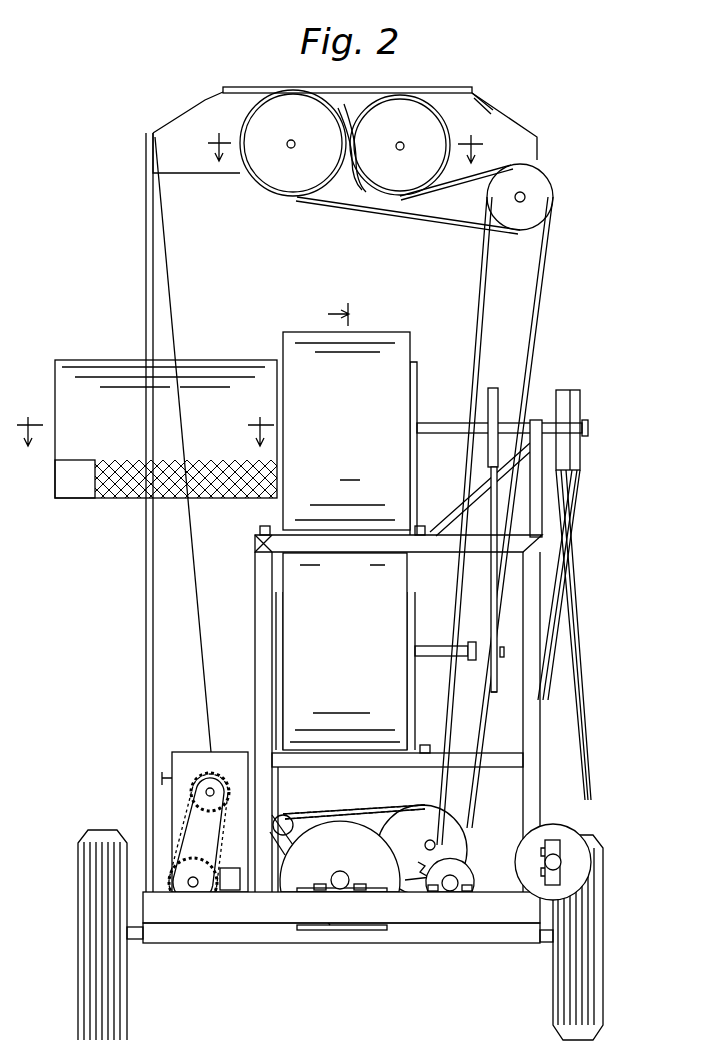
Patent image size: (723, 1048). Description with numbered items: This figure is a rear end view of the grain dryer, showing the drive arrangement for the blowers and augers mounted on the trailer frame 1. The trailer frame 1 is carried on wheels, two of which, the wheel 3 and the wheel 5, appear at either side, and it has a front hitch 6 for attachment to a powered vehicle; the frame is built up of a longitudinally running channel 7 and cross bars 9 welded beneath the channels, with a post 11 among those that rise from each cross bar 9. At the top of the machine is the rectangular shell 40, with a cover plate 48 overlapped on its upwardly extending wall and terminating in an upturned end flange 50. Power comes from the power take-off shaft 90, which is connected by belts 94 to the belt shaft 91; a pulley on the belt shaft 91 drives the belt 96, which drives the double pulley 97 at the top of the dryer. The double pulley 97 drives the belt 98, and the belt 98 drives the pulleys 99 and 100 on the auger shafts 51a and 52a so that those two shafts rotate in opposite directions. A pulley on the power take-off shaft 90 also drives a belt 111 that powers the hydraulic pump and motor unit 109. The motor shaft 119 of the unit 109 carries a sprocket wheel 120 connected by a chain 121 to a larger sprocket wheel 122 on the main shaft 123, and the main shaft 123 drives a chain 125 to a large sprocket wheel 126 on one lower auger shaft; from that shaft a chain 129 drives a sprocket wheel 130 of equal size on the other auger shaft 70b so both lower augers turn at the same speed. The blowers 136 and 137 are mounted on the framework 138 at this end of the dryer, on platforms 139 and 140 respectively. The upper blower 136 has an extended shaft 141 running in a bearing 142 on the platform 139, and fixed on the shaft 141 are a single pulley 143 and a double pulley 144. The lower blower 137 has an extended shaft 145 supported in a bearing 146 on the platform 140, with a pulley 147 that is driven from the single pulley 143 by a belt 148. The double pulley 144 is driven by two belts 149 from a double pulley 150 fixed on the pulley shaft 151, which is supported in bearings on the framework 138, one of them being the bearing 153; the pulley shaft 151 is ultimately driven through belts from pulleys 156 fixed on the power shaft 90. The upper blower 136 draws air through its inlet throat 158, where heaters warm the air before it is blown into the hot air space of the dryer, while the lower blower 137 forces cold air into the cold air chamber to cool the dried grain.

The trailer frame 1 is at (461, 933).
The wheel 3 is at (78, 877).
The wheel 5 is at (600, 893).
The front hitch 6 is at (328, 611).
The longitudinally running channel 7 is at (143, 424).
The cross bar 9 is at (270, 940).
The post 11 is at (349, 144).
The rectangular shell 40 is at (198, 127).
The cover plate 48 is at (473, 94).
The upturned end flange 50 is at (425, 91).
The auger shaft 51a is at (404, 146).
The auger shaft 52a is at (295, 144).
The auger shaft 70b is at (435, 845).
The power take-off shaft 90 is at (333, 877).
The belt shaft 91 is at (449, 893).
The belt 94 is at (425, 858).
The belt 96 is at (545, 278).
The double pulley 97 is at (547, 197).
The belt 98 is at (430, 222).
The pulley 99 is at (293, 143).
The pulley 100 is at (400, 145).
The hydraulic pump and motor unit 109 is at (197, 753).
The belt 111 is at (285, 850).
The motor shaft 119 is at (208, 786).
The sprocket wheel 120 is at (212, 805).
The chain 121 is at (240, 767).
The sprocket wheel 122 is at (190, 870).
The main shaft 123 is at (193, 893).
The chain 125 is at (293, 817).
The sprocket wheel 126 is at (279, 814).
The chain 129 is at (388, 810).
The sprocket wheel 130 is at (422, 850).
The blower 136 is at (350, 433).
The blower 137 is at (345, 651).
The framework 138 is at (258, 627).
The platform 139 is at (278, 540).
The platform 140 is at (383, 762).
The extended shaft 141 is at (432, 423).
The bearing 142 is at (537, 420).
The single pulley 143 is at (495, 388).
The double pulley 144 is at (580, 400).
The extended shaft 145 is at (446, 630).
The bearing 146 is at (472, 643).
The pulley 147 is at (498, 690).
The belt 148 is at (488, 395).
The belts 149 is at (585, 561).
The double pulley 150 is at (570, 806).
The pulley shaft 151 is at (572, 842).
The bearing 153 is at (565, 864).
The pulley 156 is at (340, 856).
The inlet throat 158 is at (181, 429).